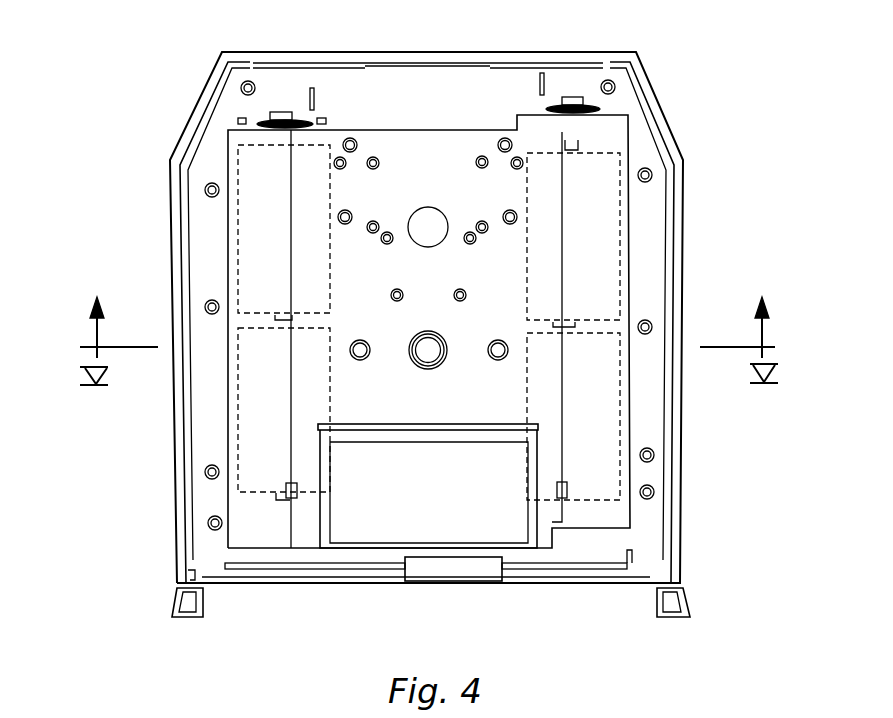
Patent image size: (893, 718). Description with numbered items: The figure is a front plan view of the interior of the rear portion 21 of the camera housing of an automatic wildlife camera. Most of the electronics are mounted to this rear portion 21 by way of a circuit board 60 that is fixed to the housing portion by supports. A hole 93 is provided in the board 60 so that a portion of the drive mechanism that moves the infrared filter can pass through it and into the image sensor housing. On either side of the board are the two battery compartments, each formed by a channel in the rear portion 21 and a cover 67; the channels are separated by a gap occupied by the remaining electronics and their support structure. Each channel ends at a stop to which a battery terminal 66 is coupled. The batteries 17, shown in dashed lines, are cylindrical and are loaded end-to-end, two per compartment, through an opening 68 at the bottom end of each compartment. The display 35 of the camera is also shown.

The batteries 17 is at (238, 243).
The rear portion 21 is at (683, 440).
The display 35 is at (370, 530).
The circuit board 60 is at (358, 188).
The battery terminal 66 is at (300, 118).
The cover 67 is at (228, 435).
The opening 68 is at (258, 545).
The hole 93 is at (428, 222).